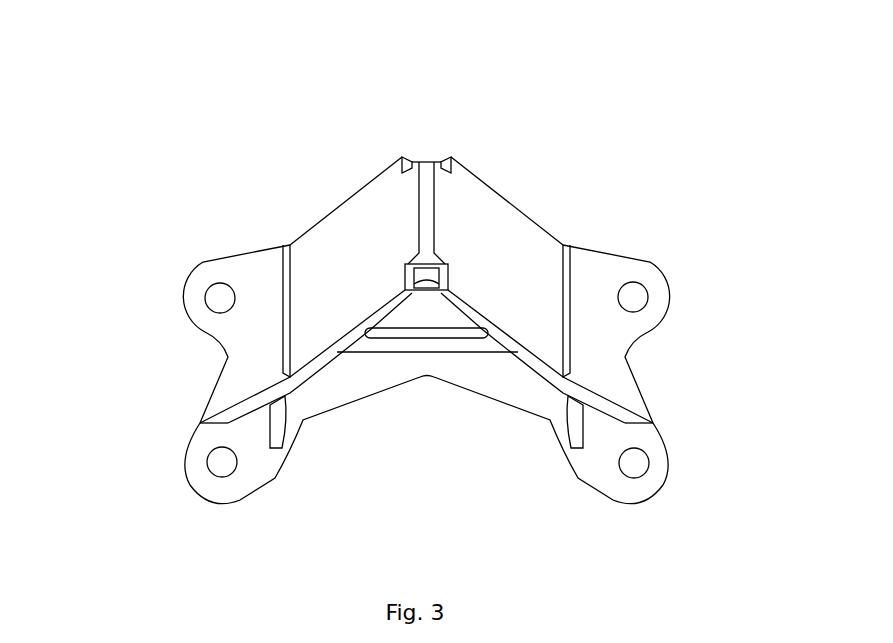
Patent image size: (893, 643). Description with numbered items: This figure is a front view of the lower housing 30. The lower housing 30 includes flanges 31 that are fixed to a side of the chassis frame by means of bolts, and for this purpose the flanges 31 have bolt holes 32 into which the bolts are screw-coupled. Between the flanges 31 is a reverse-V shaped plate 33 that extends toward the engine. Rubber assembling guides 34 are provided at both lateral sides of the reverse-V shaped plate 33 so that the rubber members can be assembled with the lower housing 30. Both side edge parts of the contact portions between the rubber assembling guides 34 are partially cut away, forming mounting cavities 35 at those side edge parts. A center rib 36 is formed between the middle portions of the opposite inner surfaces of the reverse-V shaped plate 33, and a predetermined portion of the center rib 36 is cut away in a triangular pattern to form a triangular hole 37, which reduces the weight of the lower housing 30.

The lower housing 30 is at (280, 180).
The flanges 31 is at (215, 268).
The bolt holes 32 is at (217, 299).
The reverse-V shaped plate 33 is at (365, 247).
The rubber assembling guides 34 is at (383, 178).
The mounting cavities 35 is at (427, 160).
The center rib 36 is at (495, 377).
The triangular hole 37 is at (410, 318).